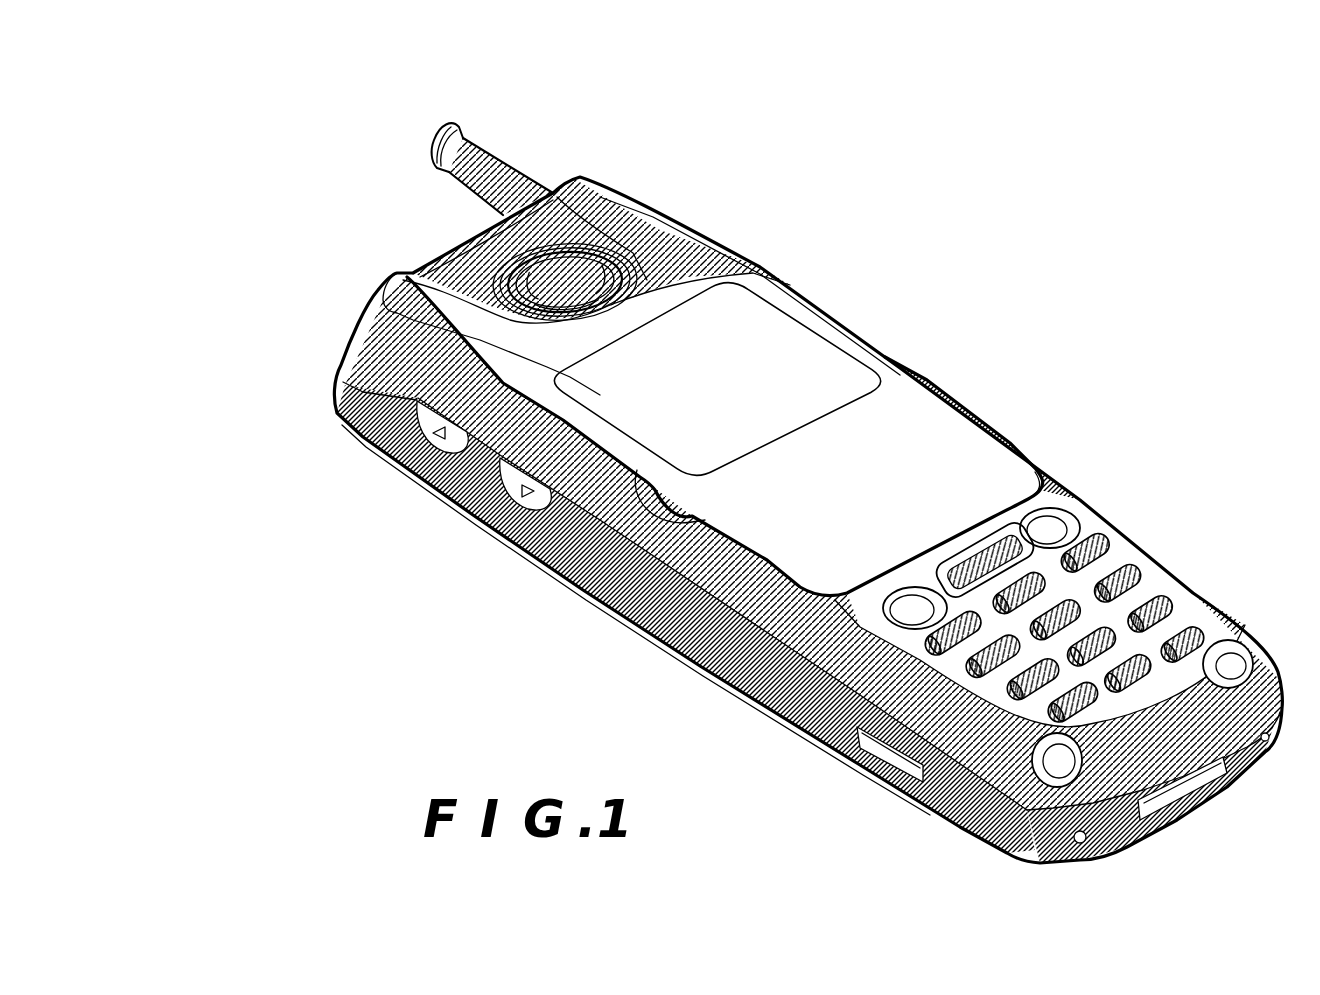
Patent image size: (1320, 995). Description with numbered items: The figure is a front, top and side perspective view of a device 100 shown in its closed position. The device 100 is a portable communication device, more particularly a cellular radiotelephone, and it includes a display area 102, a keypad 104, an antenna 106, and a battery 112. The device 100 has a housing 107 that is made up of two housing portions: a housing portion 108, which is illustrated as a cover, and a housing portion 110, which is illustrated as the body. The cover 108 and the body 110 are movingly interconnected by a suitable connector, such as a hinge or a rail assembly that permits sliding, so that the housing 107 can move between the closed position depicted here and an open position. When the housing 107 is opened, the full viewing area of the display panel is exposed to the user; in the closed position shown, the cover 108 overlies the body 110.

The device 100 is at (632, 160).
The display area 102 is at (778, 333).
The keypad 104 is at (1080, 502).
The antenna 106 is at (487, 133).
The housing 107 is at (373, 273).
The housing portion 108 is at (920, 437).
The housing portion 110 is at (1188, 585).
The battery 112 is at (583, 590).